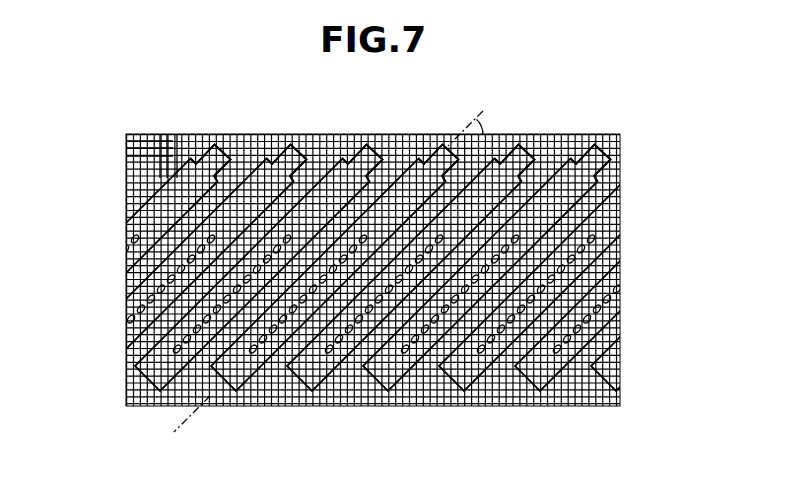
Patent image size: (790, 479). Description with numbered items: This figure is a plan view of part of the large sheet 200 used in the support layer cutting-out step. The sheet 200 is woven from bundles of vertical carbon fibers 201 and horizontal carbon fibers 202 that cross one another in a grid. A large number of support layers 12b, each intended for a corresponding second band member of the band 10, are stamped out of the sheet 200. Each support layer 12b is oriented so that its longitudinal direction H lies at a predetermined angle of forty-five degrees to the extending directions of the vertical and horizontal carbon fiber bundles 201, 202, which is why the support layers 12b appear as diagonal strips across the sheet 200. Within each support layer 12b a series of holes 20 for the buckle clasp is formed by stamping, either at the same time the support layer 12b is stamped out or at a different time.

The large sheet 200 is at (383, 110).
The vertical carbon fiber bundles 201 is at (169, 132).
The horizontal carbon fiber bundles 202 is at (126, 148).
The band 10 is at (459, 400).
The support layer 12b is at (603, 157).
The holes 20 is at (342, 321).
The longitudinal direction H is at (347, 257).